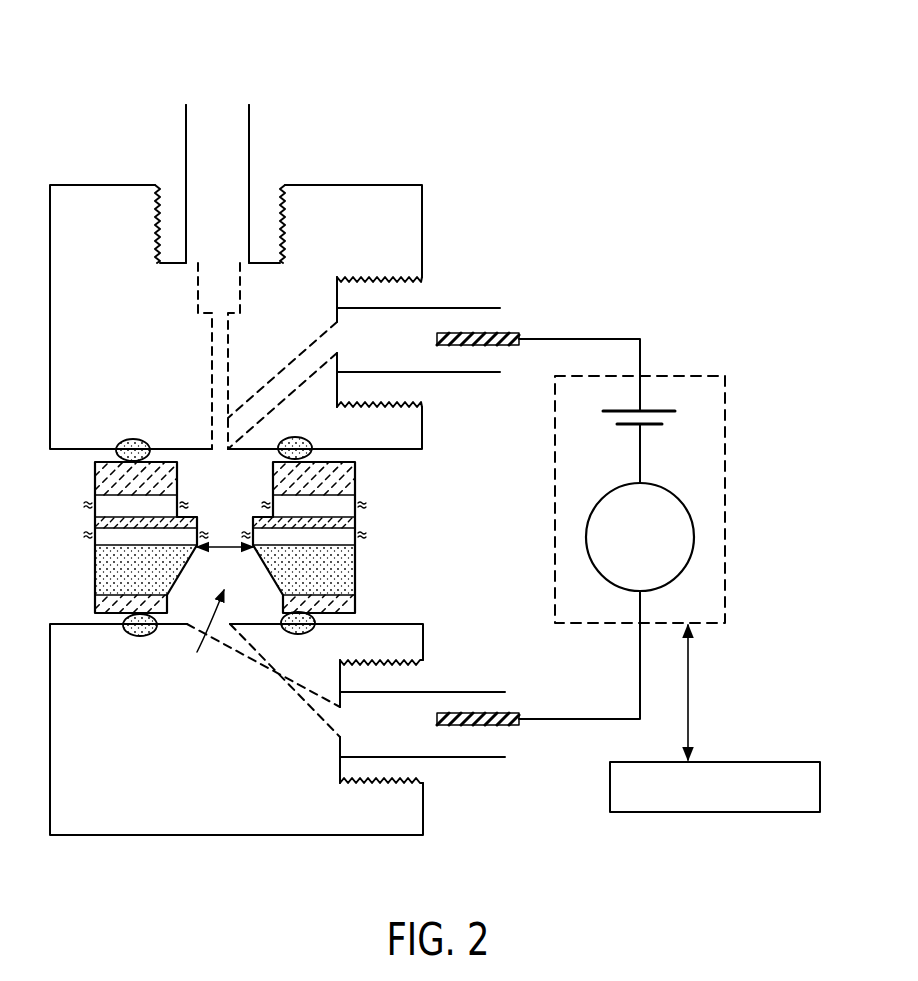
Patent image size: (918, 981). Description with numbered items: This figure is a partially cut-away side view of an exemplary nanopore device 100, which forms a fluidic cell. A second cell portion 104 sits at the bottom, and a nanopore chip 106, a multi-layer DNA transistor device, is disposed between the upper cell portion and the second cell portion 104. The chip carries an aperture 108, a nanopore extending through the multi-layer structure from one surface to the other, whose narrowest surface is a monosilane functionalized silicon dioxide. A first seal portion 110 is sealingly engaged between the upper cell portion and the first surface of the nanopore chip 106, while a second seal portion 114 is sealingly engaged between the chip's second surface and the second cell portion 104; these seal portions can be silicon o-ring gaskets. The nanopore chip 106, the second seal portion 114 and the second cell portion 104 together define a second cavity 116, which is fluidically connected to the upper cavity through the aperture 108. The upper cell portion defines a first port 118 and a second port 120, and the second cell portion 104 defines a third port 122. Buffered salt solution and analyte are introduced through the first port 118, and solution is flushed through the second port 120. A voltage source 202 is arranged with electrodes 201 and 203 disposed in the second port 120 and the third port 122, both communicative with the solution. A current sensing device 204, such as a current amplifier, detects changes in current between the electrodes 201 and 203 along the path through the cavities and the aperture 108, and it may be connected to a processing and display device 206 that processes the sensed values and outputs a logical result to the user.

The nanopore device 100 is at (735, 120).
The second cell portion 104 is at (238, 835).
The nanopore chip 106 is at (415, 528).
The aperture 108 is at (226, 512).
The first seal portion 110 is at (98, 478).
The second seal portion 114 is at (123, 634).
The second cavity 116 is at (204, 637).
The first port 118 is at (226, 113).
The second port 120 is at (283, 382).
The third port 122 is at (260, 673).
The electrode 201 is at (507, 333).
The voltage source 202 is at (659, 411).
The electrode 203 is at (507, 713).
The current sensing device 204 is at (694, 540).
The processing and display device 206 is at (787, 762).